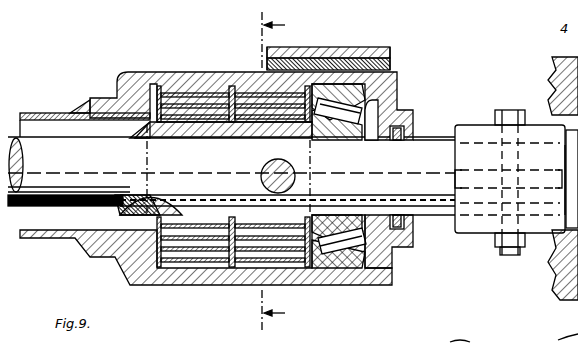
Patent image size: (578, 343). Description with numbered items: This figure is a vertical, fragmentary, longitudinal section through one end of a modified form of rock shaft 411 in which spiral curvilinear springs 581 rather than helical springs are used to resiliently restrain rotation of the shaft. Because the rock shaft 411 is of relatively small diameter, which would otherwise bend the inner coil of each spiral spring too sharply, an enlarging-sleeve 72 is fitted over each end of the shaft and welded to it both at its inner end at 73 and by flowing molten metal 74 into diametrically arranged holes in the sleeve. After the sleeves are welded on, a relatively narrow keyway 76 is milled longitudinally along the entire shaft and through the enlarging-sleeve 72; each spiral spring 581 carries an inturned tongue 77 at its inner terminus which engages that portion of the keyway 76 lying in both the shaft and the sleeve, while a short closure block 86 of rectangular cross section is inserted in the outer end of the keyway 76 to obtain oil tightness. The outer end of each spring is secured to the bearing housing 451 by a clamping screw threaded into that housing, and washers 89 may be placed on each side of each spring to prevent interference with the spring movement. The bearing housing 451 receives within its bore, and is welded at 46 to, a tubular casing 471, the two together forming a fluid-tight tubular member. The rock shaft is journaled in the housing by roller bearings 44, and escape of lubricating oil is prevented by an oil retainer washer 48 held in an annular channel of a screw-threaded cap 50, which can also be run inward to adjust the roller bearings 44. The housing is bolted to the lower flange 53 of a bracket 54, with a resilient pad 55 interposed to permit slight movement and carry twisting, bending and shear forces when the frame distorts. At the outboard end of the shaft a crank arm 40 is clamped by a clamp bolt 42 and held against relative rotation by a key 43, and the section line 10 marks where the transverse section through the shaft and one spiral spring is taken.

The section line 10 is at (264, 172).
The crank arm 40 is at (474, 125).
The clamp bolt 42 is at (510, 110).
The key 43 is at (452, 172).
The roller bearings 44 is at (338, 140).
The weld 46 is at (72, 248).
The oil retainer washer 48 is at (398, 142).
The cap 50 is at (402, 247).
The lower flange 53 is at (392, 51).
The bracket 54 is at (322, 46).
The pad 55 is at (392, 65).
The enlarging-sleeve 72 is at (203, 138).
The inner end weld 73 is at (140, 130).
The molten metal 74 is at (262, 165).
The keyway 76 is at (135, 212).
The inturned tongue 77 is at (233, 236).
The closure block 86 is at (422, 193).
The washers 89 is at (159, 84).
The rock shaft 411 is at (231, 170).
The bearing housing 451 is at (128, 72).
The tubular casing 471 is at (48, 112).
The spiral curvilinear springs 581 is at (195, 92).